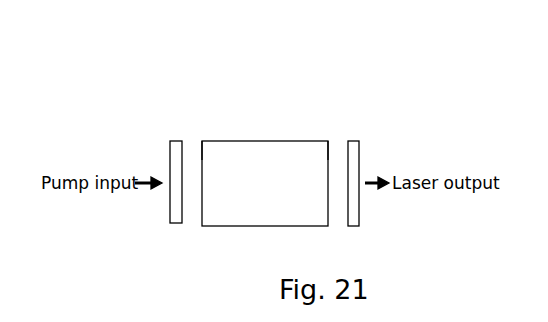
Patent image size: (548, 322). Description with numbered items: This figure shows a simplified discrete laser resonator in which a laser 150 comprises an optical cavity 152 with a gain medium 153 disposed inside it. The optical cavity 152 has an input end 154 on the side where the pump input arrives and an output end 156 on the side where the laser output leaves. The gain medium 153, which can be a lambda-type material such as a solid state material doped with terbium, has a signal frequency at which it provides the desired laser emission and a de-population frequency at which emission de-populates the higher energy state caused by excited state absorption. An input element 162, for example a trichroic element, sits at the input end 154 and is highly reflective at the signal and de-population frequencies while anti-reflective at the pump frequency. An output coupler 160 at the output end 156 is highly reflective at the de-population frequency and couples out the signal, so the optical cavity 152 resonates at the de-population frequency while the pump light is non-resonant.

The laser 150 is at (77, 37).
The optical cavity 152 is at (160, 122).
The gain medium 153 is at (265, 183).
The input end 154 is at (202, 151).
The output end 156 is at (328, 151).
The output coupler 160 is at (354, 227).
The input element 162 is at (179, 224).